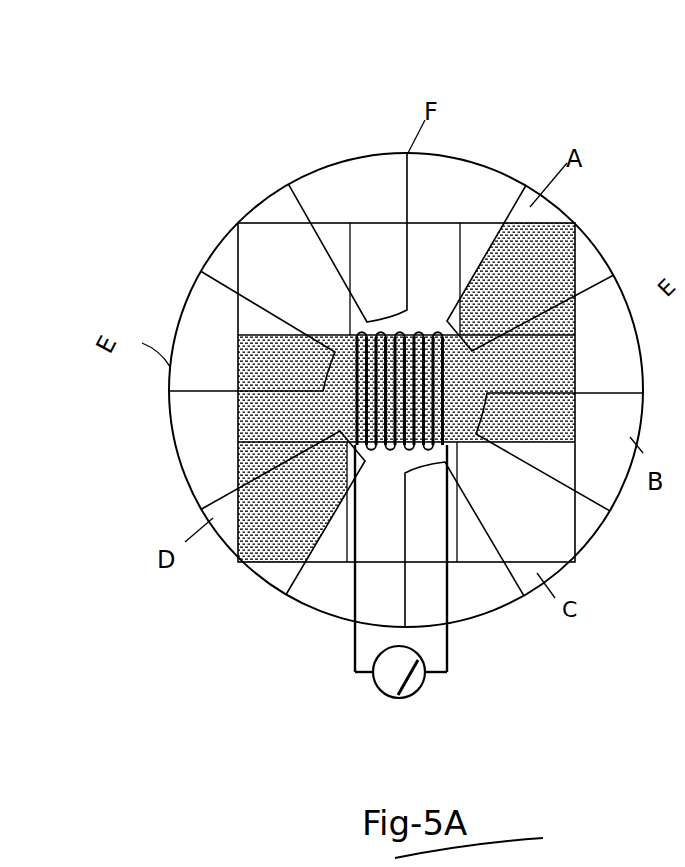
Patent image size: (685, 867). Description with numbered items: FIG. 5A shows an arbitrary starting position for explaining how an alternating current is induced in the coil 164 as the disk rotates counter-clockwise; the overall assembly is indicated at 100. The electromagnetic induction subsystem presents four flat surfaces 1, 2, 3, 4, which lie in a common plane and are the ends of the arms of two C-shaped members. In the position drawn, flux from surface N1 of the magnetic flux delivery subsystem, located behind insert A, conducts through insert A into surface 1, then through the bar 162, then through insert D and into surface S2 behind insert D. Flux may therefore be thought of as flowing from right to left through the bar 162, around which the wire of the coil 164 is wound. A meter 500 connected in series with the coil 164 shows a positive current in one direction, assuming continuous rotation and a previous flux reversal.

The stator assembly 100 is at (183, 285).
The flat surface 3 is at (335, 233).
The flat surface 1 is at (477, 238).
The flat surface 2 is at (475, 550).
The flat surface 4 is at (332, 547).
The coil 164 is at (423, 333).
The bar 162 is at (468, 447).
The meter 500 is at (420, 690).